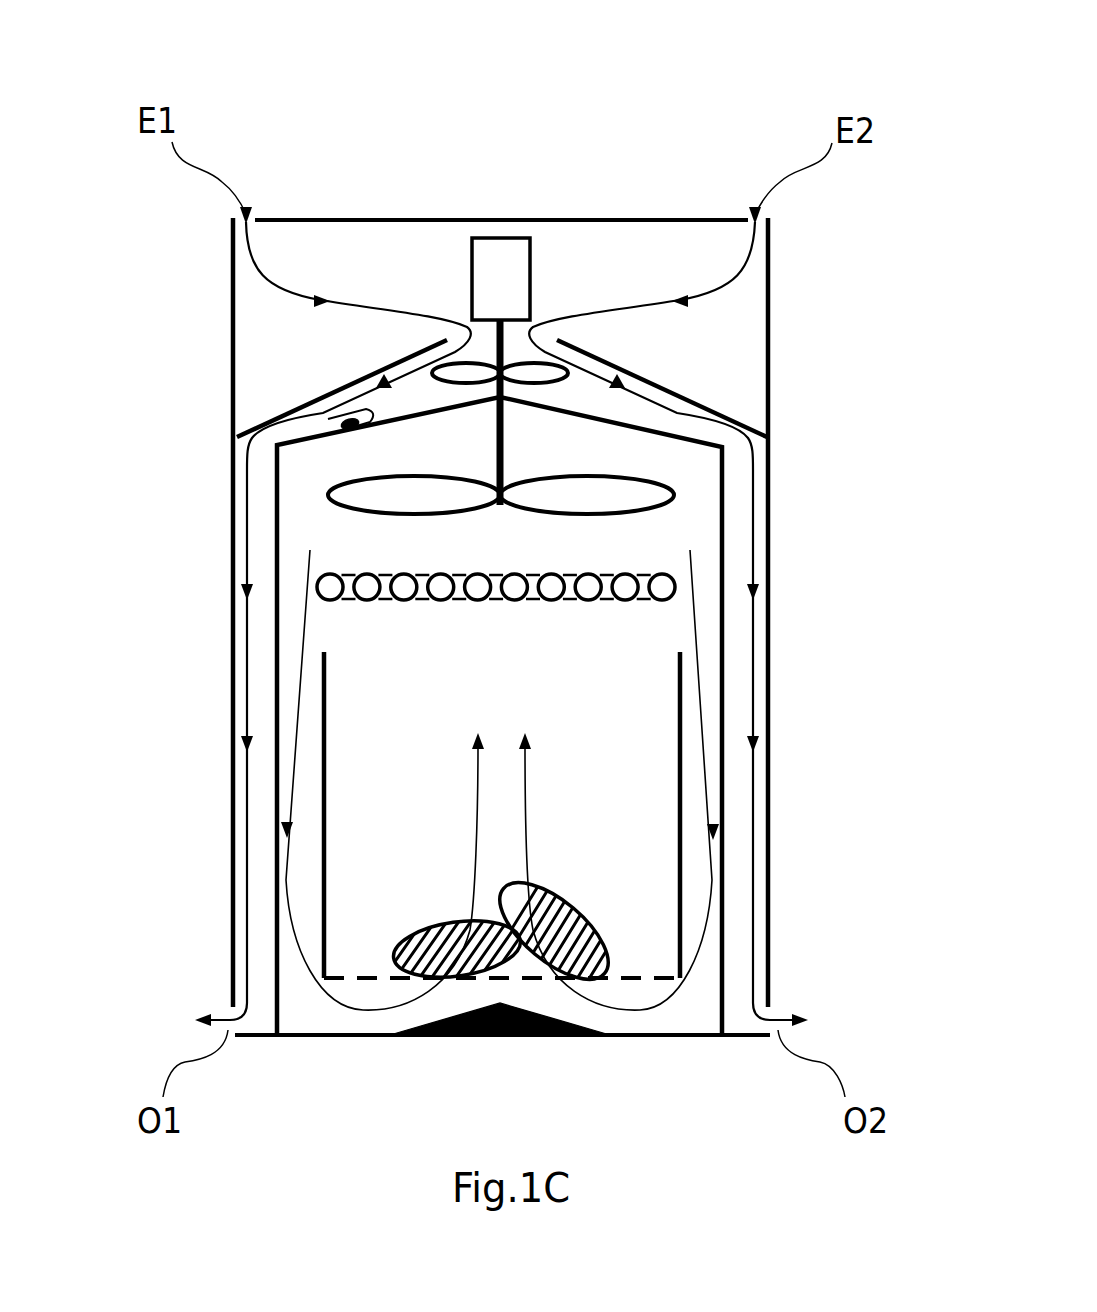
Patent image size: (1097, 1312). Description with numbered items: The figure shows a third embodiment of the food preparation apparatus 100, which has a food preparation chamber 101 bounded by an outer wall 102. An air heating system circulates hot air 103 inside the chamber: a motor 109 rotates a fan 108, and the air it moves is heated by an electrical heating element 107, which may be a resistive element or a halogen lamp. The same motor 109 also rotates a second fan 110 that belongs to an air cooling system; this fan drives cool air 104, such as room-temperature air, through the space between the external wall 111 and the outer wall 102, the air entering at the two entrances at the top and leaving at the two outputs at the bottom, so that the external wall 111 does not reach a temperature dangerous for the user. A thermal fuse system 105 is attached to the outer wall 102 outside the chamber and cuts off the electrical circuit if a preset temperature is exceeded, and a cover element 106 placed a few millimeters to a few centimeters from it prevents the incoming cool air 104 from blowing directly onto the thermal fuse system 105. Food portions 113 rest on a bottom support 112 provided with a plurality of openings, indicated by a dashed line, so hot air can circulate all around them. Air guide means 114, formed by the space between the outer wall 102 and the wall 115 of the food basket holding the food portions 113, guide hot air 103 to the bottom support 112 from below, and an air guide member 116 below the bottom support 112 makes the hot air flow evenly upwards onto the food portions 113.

The apparatus 100 is at (776, 82).
The food preparation chamber 101 is at (573, 862).
The outer wall 102 is at (725, 717).
The hot air 103 is at (297, 662).
The cool air 104 is at (253, 273).
The thermal fuse system 105 is at (336, 421).
The cover element 106 is at (310, 403).
The electrical heating element 107 is at (675, 574).
The fan 108 is at (676, 491).
The motor 109 is at (533, 243).
The fan 110 is at (568, 373).
The external wall 111 is at (770, 637).
The bottom support 112 is at (353, 975).
The food portions 113 is at (595, 930).
The air guide means 114 is at (305, 785).
The wall of the food basket 115 is at (319, 728).
The air guide member 116 is at (612, 1032).